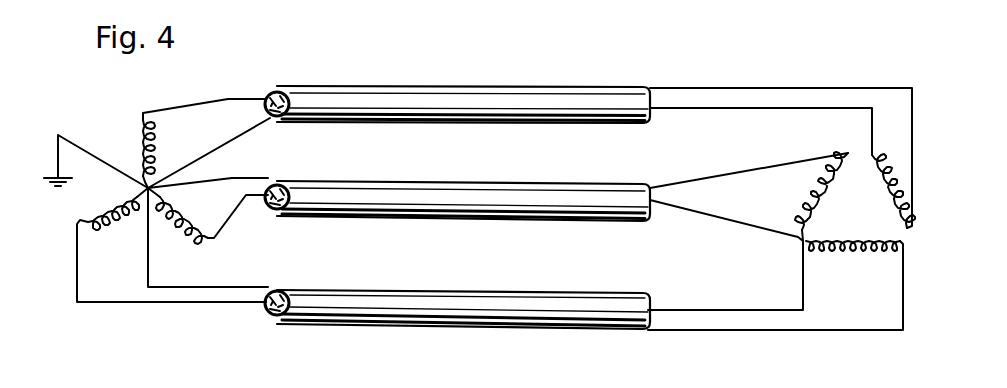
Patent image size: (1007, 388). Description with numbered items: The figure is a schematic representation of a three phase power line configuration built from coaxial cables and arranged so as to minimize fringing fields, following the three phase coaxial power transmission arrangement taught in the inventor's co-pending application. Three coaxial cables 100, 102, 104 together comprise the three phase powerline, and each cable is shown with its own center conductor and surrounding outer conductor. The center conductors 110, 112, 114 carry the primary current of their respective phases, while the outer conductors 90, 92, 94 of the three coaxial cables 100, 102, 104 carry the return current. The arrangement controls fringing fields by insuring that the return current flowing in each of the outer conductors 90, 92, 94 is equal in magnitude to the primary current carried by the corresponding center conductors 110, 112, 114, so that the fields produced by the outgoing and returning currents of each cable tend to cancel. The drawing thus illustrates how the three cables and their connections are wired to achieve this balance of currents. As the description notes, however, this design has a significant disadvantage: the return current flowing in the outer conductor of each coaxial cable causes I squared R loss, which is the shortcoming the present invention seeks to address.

The outer conductor 90 is at (270, 290).
The outer conductor 92 is at (273, 177).
The outer conductor 94 is at (272, 117).
The coaxial cable 100 is at (480, 307).
The coaxial cable 102 is at (473, 193).
The coaxial cable 104 is at (473, 97).
The center conductor 110 is at (256, 307).
The center conductor 112 is at (250, 197).
The center conductor 114 is at (252, 95).